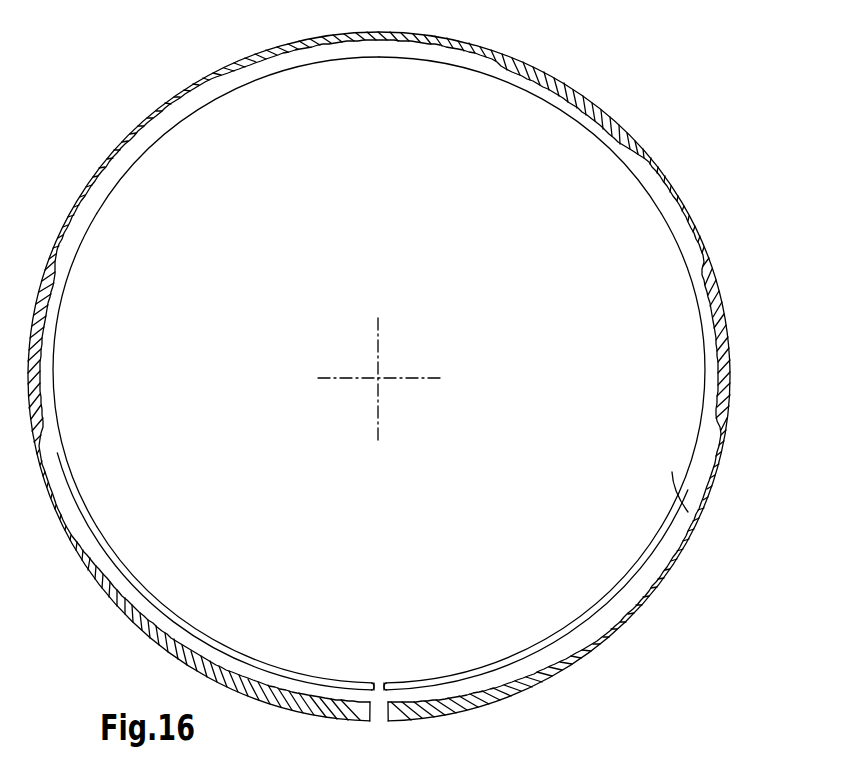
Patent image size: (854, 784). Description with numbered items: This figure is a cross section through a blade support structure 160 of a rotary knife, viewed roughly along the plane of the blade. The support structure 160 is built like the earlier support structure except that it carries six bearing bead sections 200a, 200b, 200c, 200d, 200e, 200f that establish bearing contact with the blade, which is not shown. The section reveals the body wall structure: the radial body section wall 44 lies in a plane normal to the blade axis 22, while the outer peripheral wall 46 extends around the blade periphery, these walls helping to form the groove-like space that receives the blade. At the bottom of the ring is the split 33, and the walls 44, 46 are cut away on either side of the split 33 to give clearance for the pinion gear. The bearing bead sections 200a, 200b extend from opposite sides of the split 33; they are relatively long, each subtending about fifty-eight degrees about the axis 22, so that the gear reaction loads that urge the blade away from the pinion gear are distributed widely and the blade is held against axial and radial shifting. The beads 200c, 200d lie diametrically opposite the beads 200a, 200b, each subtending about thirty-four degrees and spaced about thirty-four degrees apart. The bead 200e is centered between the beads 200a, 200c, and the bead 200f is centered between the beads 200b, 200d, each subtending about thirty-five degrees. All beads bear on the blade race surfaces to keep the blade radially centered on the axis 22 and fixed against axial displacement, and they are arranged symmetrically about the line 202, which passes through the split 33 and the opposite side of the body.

The radial body section wall 44 is at (656, 202).
The outer peripheral wall 46 is at (712, 468).
The blade support structure 160 is at (712, 518).
The bearing bead section 200a is at (216, 668).
The bearing bead section 200b is at (537, 672).
The bearing bead section 200c is at (197, 98).
The bearing bead section 200d is at (571, 116).
The bearing bead section 200e is at (44, 358).
The bearing bead section 200f is at (705, 341).
The split 33 is at (375, 717).
The line 202 is at (380, 328).
The blade axis 22 is at (380, 394).